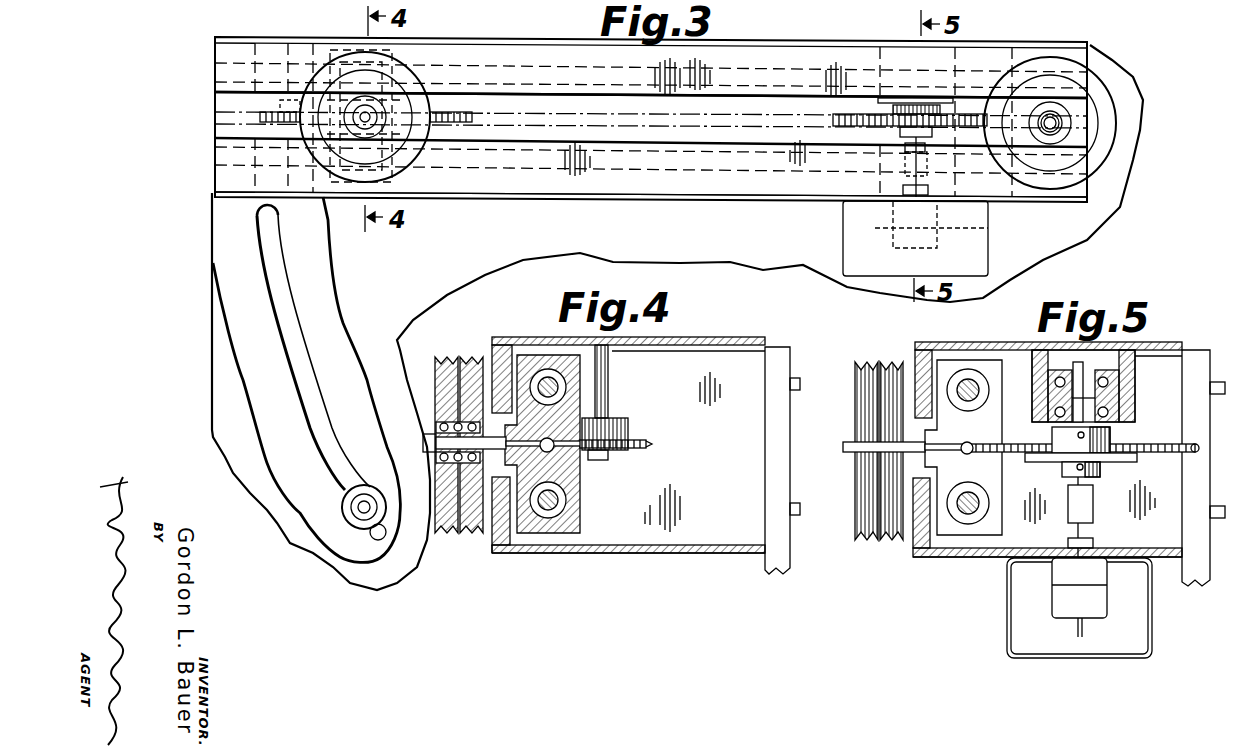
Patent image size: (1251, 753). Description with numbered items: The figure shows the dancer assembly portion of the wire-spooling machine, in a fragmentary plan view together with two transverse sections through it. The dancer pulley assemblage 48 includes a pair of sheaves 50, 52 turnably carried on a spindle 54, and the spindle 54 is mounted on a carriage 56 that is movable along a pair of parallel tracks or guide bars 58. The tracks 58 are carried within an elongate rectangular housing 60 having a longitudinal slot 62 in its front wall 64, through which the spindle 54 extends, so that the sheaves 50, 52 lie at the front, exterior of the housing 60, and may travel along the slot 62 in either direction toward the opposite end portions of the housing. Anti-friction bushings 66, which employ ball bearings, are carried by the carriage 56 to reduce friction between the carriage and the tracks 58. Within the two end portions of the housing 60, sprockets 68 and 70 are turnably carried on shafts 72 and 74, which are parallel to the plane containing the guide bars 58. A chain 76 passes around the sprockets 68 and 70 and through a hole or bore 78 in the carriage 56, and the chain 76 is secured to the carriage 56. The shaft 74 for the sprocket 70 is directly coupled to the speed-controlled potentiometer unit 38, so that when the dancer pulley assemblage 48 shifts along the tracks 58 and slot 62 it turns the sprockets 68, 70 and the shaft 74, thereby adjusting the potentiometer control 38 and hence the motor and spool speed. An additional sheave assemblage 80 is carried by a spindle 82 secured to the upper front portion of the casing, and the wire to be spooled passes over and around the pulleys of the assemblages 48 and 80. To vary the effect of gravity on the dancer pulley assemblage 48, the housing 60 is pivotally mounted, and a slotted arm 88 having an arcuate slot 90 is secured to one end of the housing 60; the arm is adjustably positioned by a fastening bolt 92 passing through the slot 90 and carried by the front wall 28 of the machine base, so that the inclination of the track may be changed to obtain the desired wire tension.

In FIG. 3, the front wall 28 is at (222, 400).
In FIG. 3, the speed-controlled potentiometer unit 38 is at (988, 236).
In FIG. 5, the speed-controlled potentiometer unit 38 is at (1048, 604).
In FIG. 3, the dancer pulley assemblage 48 is at (412, 170).
In FIG. 4, the dancer pulley assemblage 48 is at (458, 463).
In FIG. 5, the dancer pulley assemblage 48 is at (868, 461).
In FIG. 4, the sheave 50 is at (447, 358).
In FIG. 5, the sheave 50 is at (867, 362).
In FIG. 4, the sheave 52 is at (471, 358).
In FIG. 5, the sheave 52 is at (890, 362).
In FIG. 4, the spindle 54 is at (440, 442).
In FIG. 5, the spindle 54 is at (906, 447).
In FIG. 4, the carriage 56 is at (578, 487).
In FIG. 5, the carriage 56 is at (990, 476).
In FIG. 4, the tracks or guide bars 58 is at (555, 384).
In FIG. 5, the tracks or guide bars 58 is at (970, 382).
In FIG. 3, the housing 60 is at (620, 201).
In FIG. 4, the housing 60 is at (686, 555).
In FIG. 5, the housing 60 is at (1069, 464).
In FIG. 3, the longitudinal slot 62 is at (534, 94).
In FIG. 4, the longitudinal slot 62 is at (503, 548).
In FIG. 5, the longitudinal slot 62 is at (922, 545).
In FIG. 3, the front wall 64 is at (713, 182).
In FIG. 4, the front wall 64 is at (500, 540).
In FIG. 5, the front wall 64 is at (922, 560).
In FIG. 4, the anti-friction bushings 66 is at (562, 394).
In FIG. 5, the anti-friction bushings 66 is at (980, 398).
In FIG. 3, the sprocket 68 is at (262, 117).
In FIG. 4, the sprocket 68 is at (609, 457).
In FIG. 3, the sprocket 70 is at (843, 128).
In FIG. 5, the sprocket 70 is at (1167, 454).
In FIG. 3, the shaft 72 is at (298, 102).
In FIG. 4, the shaft 72 is at (610, 452).
In FIG. 5, the shaft 74 is at (1110, 392).
In FIG. 3, the chain 76 is at (465, 128).
In FIG. 4, the chain 76 is at (648, 444).
In FIG. 5, the chain 76 is at (1197, 447).
In FIG. 4, the hole or bore 78 is at (553, 451).
In FIG. 5, the hole or bore 78 is at (962, 444).
In FIG. 3, the additional sheave assemblage 80 is at (1115, 98).
In FIG. 3, the spindle 82 is at (1058, 113).
In FIG. 3, the slotted arm 88 is at (320, 330).
In FIG. 3, the arcuate slot 90 is at (285, 312).
In FIG. 3, the fastening bolt 92 is at (360, 518).